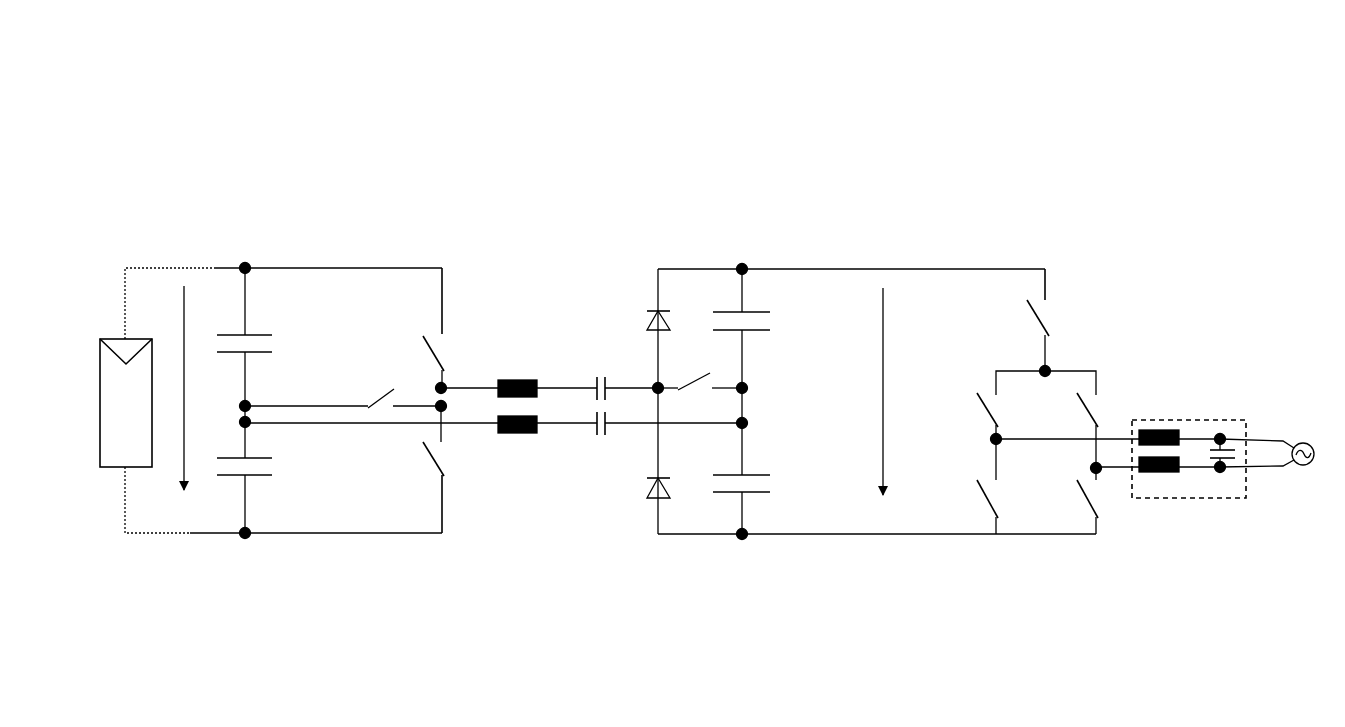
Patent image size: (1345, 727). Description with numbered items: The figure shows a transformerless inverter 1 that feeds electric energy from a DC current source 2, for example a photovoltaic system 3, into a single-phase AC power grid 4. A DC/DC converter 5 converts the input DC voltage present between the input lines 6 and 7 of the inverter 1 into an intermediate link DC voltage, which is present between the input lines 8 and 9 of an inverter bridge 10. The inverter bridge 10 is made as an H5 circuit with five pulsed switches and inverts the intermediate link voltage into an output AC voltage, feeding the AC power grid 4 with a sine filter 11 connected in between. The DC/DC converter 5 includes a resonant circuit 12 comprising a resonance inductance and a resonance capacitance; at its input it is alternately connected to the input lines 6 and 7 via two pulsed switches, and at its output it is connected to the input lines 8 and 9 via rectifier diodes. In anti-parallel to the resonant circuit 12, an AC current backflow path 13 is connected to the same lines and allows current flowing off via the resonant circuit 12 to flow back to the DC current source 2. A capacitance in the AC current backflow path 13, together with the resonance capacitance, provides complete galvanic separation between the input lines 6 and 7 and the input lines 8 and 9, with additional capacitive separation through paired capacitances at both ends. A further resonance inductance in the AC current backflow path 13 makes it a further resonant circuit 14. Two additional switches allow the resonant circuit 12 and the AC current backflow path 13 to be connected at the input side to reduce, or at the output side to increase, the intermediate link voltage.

The transformerless inverter 1 is at (787, 212).
The DC current source 2 is at (78, 368).
The photovoltaic system 3 is at (100, 424).
The AC power grid 4 is at (1305, 442).
The DC/DC converter 5 is at (436, 544).
The input line 6 is at (216, 265).
The input line 7 is at (221, 535).
The input line of the inverter bridge 8 is at (914, 267).
The input line of the inverter bridge 9 is at (913, 536).
The inverter bridge 10 is at (991, 547).
The sine filter 11 is at (1191, 420).
The resonant circuit 12 is at (537, 363).
The AC current backflow path 13 is at (547, 447).
The further resonant circuit 14 is at (469, 447).